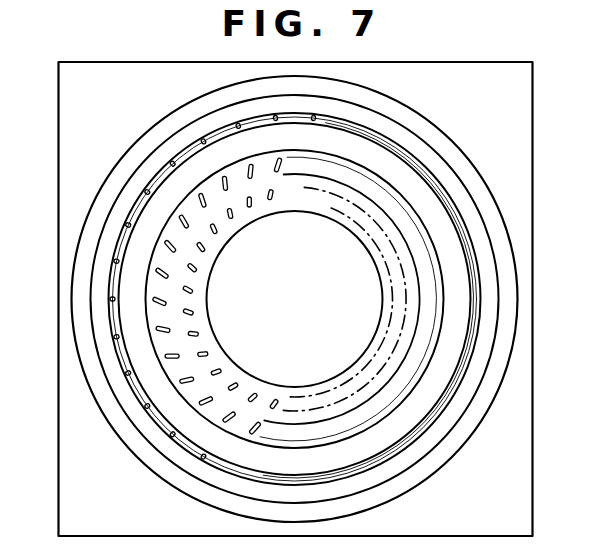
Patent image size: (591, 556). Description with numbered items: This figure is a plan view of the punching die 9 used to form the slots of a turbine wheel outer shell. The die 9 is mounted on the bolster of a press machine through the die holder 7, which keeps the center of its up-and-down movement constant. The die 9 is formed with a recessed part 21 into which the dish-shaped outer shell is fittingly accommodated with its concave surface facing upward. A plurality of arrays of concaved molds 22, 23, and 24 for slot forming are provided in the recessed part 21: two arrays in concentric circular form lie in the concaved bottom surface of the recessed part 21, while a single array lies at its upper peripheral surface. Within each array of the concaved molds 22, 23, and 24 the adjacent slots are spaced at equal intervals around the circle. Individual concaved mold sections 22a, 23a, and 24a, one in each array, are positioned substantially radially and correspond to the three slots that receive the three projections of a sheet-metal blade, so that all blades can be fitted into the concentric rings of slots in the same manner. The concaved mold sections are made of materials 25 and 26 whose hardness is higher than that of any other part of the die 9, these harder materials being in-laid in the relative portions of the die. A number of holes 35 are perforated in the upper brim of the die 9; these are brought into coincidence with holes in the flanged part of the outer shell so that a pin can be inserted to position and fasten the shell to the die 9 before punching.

The die holder 7 is at (521, 422).
The die 9 is at (505, 356).
The recessed part 21 is at (313, 332).
The concaved molds 22 is at (192, 312).
The concaved mold section 22a is at (196, 333).
The concaved molds 23 is at (165, 302).
The concaved mold section 23a is at (163, 333).
The concaved molds 24 is at (115, 262).
The concaved mold section 24a is at (112, 302).
The material of higher hardness 25 is at (271, 390).
The material of higher hardness 26 is at (433, 153).
The holes 35 is at (396, 128).